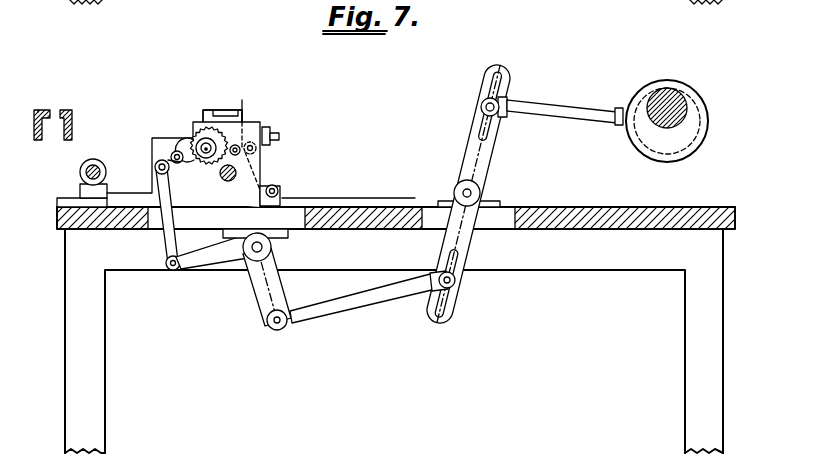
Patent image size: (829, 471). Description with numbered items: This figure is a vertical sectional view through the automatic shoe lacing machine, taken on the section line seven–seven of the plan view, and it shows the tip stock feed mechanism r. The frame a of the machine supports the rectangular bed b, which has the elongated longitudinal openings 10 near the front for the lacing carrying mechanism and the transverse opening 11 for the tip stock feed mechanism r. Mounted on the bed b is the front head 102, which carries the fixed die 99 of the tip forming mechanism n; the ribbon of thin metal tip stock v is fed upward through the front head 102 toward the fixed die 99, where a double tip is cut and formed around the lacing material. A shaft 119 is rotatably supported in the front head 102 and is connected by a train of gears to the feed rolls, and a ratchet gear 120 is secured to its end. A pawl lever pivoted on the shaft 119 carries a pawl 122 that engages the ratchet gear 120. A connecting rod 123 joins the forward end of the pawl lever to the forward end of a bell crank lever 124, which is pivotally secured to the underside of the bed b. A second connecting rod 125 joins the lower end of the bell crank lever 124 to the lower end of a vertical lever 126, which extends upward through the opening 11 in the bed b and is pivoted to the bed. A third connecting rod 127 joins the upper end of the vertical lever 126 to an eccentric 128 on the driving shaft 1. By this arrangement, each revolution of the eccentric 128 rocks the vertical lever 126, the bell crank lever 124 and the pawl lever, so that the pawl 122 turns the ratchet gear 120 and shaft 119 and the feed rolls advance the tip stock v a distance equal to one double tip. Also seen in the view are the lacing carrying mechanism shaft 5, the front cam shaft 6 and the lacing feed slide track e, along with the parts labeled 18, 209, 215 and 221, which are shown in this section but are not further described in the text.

The driving shaft 1 is at (666, 100).
The lacing carrying mechanism shaft 5 is at (222, 178).
The front cam shaft 6 is at (81, 172).
The elongated longitudinal opening 10 is at (300, 225).
The transverse opening 11 is at (506, 214).
The guide pieces 18 is at (78, 101).
The fixed die 99 is at (224, 111).
The front head 102 is at (157, 188).
The shaft 119 is at (207, 140).
The ratchet gear 120 is at (200, 134).
The pawl 122 is at (174, 150).
The connecting rod 123 is at (166, 237).
The bell crank lever 124 is at (262, 282).
The connecting rod 125 is at (374, 300).
The vertical lever 126 is at (462, 242).
The connecting rod 127 is at (559, 108).
The eccentric 128 is at (655, 153).
The stop 209 is at (279, 136).
The roller 215 is at (250, 140).
The pawl 221 is at (170, 158).
The frame a is at (70, 357).
The bed b is at (57, 218).
The lacing feed slide track e is at (38, 111).
The tip forming mechanism n is at (262, 168).
The tip stock feed mechanism r is at (470, 160).
The ribbon of thin metal tip stock v is at (396, 178).